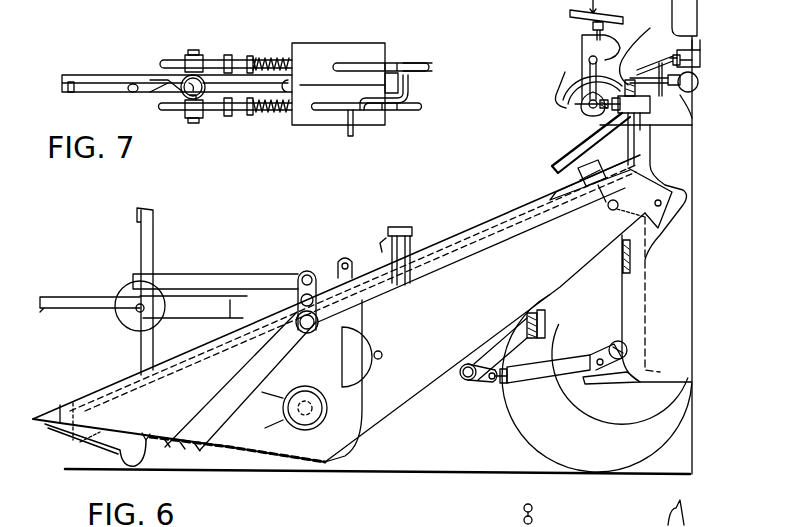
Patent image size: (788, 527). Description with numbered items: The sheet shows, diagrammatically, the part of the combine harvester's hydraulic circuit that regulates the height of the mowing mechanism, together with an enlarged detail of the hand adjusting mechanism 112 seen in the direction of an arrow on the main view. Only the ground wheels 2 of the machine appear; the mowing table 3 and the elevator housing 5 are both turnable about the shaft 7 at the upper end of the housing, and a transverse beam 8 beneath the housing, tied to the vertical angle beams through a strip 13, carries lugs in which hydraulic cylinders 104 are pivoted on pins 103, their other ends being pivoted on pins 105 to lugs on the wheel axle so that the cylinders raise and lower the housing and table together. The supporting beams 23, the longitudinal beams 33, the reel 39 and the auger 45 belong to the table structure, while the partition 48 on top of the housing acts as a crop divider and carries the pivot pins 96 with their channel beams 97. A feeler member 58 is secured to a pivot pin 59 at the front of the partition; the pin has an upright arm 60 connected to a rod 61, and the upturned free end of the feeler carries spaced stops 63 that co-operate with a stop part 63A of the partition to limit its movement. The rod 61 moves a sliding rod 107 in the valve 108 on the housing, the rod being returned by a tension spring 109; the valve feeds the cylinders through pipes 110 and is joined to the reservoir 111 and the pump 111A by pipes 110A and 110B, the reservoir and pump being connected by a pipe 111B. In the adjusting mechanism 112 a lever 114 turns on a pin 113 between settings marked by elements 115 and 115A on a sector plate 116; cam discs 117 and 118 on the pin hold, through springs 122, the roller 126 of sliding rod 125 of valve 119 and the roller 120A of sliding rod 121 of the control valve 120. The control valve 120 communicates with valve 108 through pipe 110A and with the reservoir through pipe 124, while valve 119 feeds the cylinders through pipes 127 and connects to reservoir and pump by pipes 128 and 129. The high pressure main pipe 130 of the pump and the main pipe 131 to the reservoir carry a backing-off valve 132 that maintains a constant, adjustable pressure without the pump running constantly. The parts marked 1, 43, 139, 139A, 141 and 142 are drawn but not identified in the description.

In FIG. 6, the rear frame post 1 is at (616, 314).
In FIG. 6, the ground wheels 2 is at (548, 450).
In FIG. 6, the mowing table 3 is at (338, 464).
In FIG. 6, the elevator housing 5 is at (382, 424).
In FIG. 6, the shaft 7 is at (612, 212).
In FIG. 6, the beam 8 is at (465, 381).
In FIG. 6, the strip 13 is at (518, 338).
In FIG. 6, the supporting beams 23 is at (260, 368).
In FIG. 6, the beams 33 is at (200, 275).
In FIG. 6, the reel 39 is at (72, 308).
In FIG. 6, the pivot lug 43 is at (348, 260).
In FIG. 6, the auger 45 is at (297, 428).
In FIG. 6, the partition 48 is at (490, 218).
In FIG. 6, the feeler member 58 is at (92, 450).
In FIG. 6, the pivot pin 59 is at (68, 443).
In FIG. 6, the upright arm 60 is at (80, 415).
In FIG. 6, the rod 61 is at (108, 400).
In FIG. 6, the stops 63 is at (148, 436).
In FIG. 6, the part of the partition 63A is at (140, 432).
In FIG. 6, the pivot pins 96 is at (384, 236).
In FIG. 6, the channel beam 97 is at (403, 227).
In FIG. 6, the pins 103 is at (491, 385).
In FIG. 6, the hydraulic cylinders 104 is at (538, 380).
In FIG. 6, the pins 105 is at (605, 347).
In FIG. 6, the sliding rod 107 is at (575, 176).
In FIG. 6, the valve 108 is at (572, 182).
In FIG. 6, the tension spring 109 is at (603, 198).
In FIG. 6, the pipes 110 is at (658, 342).
In FIG. 6, the pipe 110A is at (600, 140).
In FIG. 7, the pipe 110B is at (352, 138).
In FIG. 6, the pipe 110B is at (572, 156).
In FIG. 6, the reservoir 111 is at (703, 48).
In FIG. 6, the pump 111A is at (698, 84).
In FIG. 6, the pipe 111B is at (702, 60).
In FIG. 6, the adjusting mechanism 112 is at (584, 113).
In FIG. 6, the pin 113 is at (580, 105).
In FIG. 7, the lever 114 is at (183, 80).
In FIG. 6, the lever 114 is at (588, 58).
In FIG. 7, the element 115 is at (125, 93).
In FIG. 7, the element 115A is at (68, 93).
In FIG. 7, the sector plate 116 is at (100, 75).
In FIG. 6, the sector plate 116 is at (568, 98).
In FIG. 7, the cam disc 117 is at (180, 108).
In FIG. 6, the cam disc 117 is at (563, 96).
In FIG. 7, the cam disc 118 is at (206, 52).
In FIG. 7, the valve 119 is at (312, 125).
In FIG. 6, the valve 119 is at (650, 122).
In FIG. 7, the control valve 120 is at (318, 43).
In FIG. 7, the roller 120A is at (228, 56).
In FIG. 7, the sliding rod 121 is at (240, 55).
In FIG. 7, the spring 122 is at (262, 55).
In FIG. 7, the pipe 124 is at (345, 60).
In FIG. 7, the sliding rod 125 is at (238, 116).
In FIG. 7, the roller 126 is at (222, 114).
In FIG. 6, the pipes 127 is at (645, 185).
In FIG. 7, the pipe 128 is at (410, 86).
In FIG. 6, the pipe 128 is at (635, 40).
In FIG. 7, the pipe 129 is at (415, 108).
In FIG. 6, the pipe 129 is at (616, 16).
In FIG. 6, the high pressure main pipe 130 is at (650, 106).
In FIG. 7, the main pipe 131 is at (425, 64).
In FIG. 6, the main pipe 131 is at (665, 58).
In FIG. 6, the backing-off valve 132 is at (694, 108).
In FIG. 6, the link 139 is at (535, 508).
In FIG. 6, the link end 139A is at (524, 520).
In FIG. 6, the pin 141 is at (548, 519).
In FIG. 6, the bracket 142 is at (572, 524).